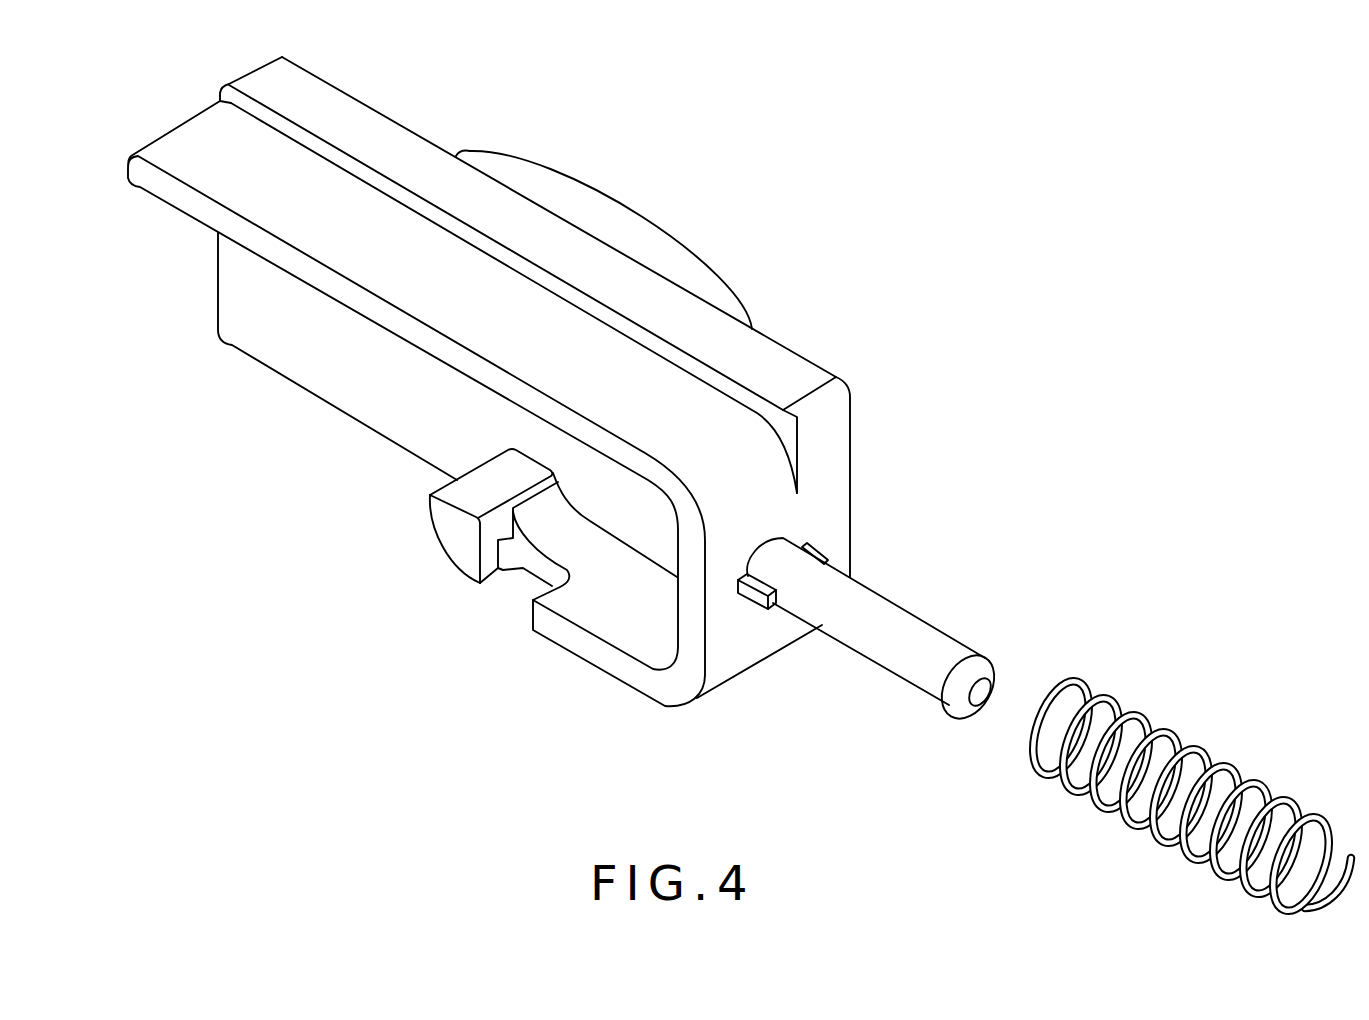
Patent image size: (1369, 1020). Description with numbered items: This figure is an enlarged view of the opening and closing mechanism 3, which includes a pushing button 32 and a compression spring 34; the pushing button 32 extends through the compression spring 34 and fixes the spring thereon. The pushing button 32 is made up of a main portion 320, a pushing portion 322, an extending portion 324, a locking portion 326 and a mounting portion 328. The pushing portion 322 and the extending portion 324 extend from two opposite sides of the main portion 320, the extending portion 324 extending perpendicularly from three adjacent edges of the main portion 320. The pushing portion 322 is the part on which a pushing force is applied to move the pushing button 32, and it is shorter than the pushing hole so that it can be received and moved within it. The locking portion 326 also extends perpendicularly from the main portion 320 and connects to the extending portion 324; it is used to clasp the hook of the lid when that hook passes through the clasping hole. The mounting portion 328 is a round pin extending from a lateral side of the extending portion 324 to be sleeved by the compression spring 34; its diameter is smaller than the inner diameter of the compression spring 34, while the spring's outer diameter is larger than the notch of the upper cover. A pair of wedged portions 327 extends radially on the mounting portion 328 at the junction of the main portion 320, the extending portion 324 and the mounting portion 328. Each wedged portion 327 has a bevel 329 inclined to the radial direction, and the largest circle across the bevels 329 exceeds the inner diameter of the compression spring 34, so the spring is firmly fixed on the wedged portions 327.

The opening and closing mechanism 3 is at (920, 120).
The pushing button 32 is at (571, 417).
The main portion 320 is at (380, 143).
The pushing portion 322 is at (660, 263).
The extending portion 324 is at (457, 277).
The locking portion 326 is at (446, 550).
The wedged portion 327 is at (810, 553).
The mounting portion 328 is at (903, 647).
The bevel 329 is at (752, 593).
The compression spring 34 is at (1093, 700).